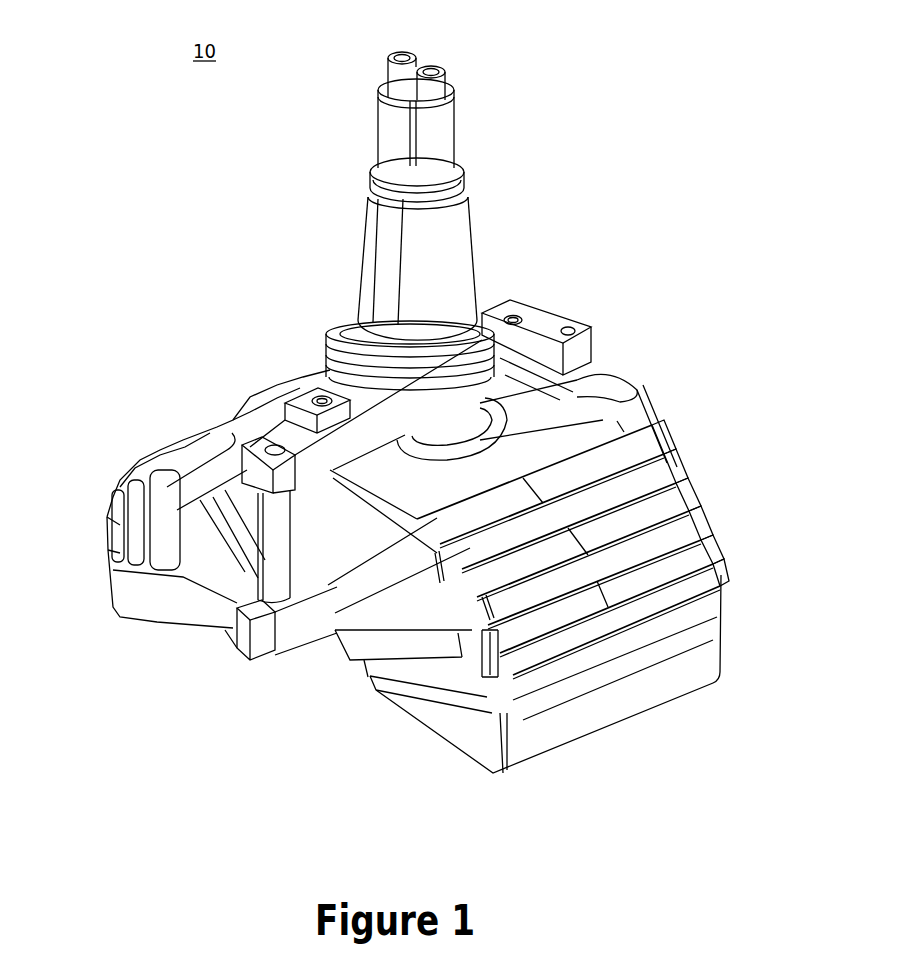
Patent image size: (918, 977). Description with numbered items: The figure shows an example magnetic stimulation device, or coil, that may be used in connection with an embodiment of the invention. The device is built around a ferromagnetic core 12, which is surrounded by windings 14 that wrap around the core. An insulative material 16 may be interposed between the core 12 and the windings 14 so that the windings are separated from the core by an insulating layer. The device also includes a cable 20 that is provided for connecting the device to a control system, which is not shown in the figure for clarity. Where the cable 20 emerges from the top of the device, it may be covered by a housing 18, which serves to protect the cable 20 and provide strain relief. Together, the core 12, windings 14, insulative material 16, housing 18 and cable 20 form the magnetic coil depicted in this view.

The ferromagnetic core 12 is at (163, 609).
The windings 14 is at (448, 695).
The insulative material 16 is at (612, 697).
The housing 18 is at (382, 264).
The cable 20 is at (458, 64).